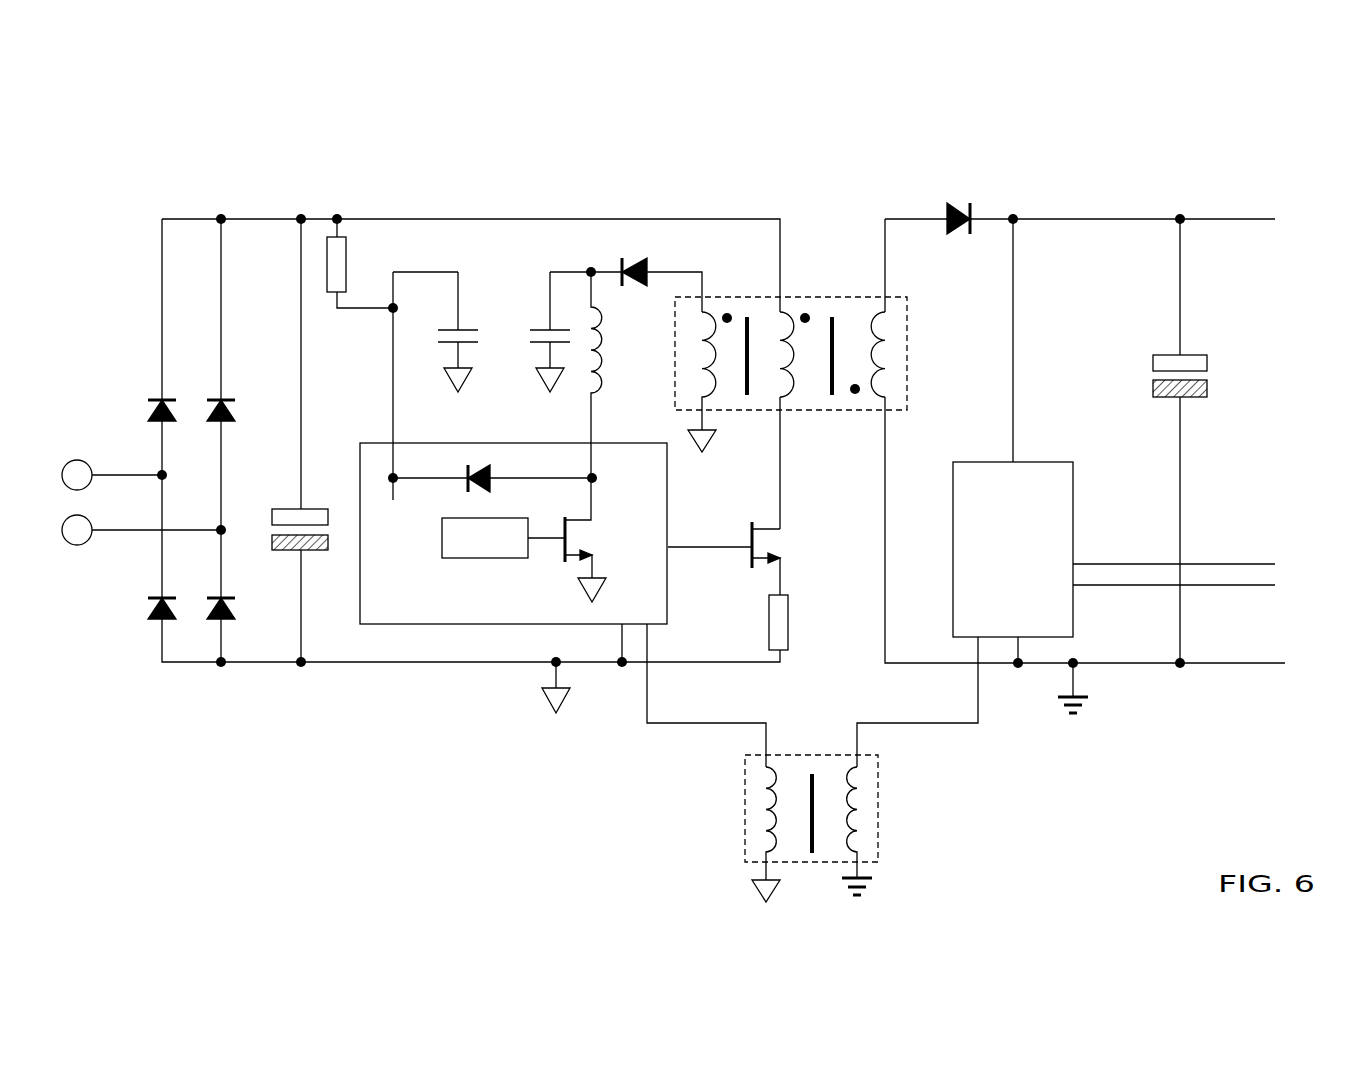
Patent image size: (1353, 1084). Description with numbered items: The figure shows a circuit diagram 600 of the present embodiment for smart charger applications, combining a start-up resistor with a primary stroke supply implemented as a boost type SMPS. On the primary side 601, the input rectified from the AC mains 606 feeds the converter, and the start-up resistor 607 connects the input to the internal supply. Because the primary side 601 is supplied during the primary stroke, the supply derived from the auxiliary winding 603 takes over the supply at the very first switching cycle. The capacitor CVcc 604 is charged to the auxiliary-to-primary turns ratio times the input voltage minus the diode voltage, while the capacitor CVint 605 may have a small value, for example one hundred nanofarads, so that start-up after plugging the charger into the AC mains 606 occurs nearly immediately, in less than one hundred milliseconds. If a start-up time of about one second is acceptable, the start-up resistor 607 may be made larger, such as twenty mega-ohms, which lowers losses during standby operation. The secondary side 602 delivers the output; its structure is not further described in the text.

The circuit diagram 600 is at (1308, 172).
The primary side 601 is at (845, 180).
The secondary side 602 is at (1292, 180).
The auxiliary winding 603 is at (714, 310).
The CVcc capacitor 604 is at (537, 347).
The CVint capacitor 605 is at (470, 328).
The AC mains 606 is at (110, 472).
The start-up resistor R2 607 is at (330, 294).